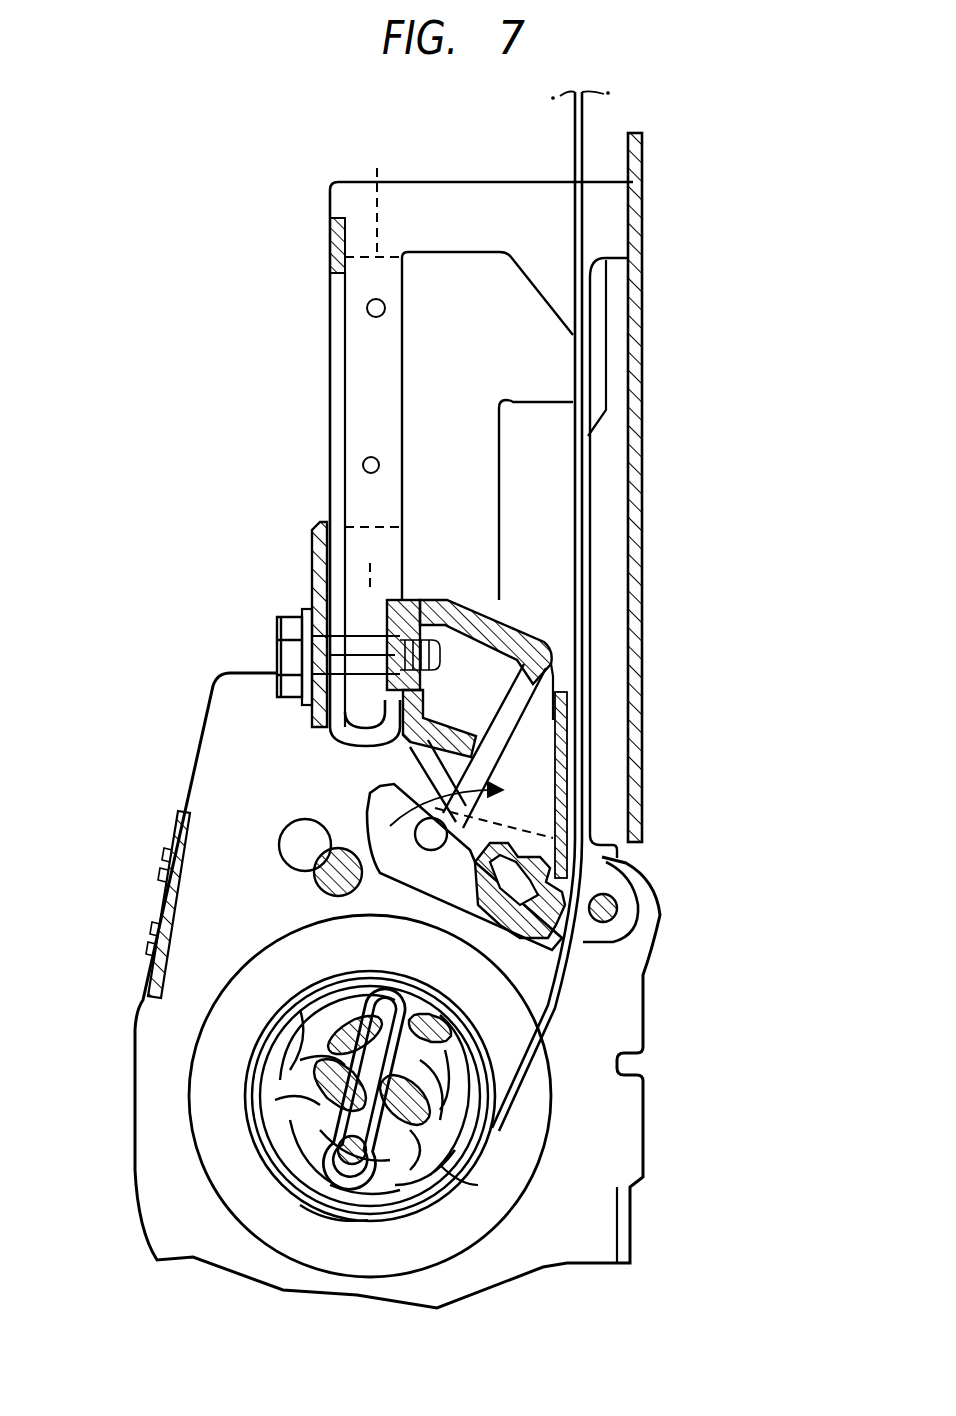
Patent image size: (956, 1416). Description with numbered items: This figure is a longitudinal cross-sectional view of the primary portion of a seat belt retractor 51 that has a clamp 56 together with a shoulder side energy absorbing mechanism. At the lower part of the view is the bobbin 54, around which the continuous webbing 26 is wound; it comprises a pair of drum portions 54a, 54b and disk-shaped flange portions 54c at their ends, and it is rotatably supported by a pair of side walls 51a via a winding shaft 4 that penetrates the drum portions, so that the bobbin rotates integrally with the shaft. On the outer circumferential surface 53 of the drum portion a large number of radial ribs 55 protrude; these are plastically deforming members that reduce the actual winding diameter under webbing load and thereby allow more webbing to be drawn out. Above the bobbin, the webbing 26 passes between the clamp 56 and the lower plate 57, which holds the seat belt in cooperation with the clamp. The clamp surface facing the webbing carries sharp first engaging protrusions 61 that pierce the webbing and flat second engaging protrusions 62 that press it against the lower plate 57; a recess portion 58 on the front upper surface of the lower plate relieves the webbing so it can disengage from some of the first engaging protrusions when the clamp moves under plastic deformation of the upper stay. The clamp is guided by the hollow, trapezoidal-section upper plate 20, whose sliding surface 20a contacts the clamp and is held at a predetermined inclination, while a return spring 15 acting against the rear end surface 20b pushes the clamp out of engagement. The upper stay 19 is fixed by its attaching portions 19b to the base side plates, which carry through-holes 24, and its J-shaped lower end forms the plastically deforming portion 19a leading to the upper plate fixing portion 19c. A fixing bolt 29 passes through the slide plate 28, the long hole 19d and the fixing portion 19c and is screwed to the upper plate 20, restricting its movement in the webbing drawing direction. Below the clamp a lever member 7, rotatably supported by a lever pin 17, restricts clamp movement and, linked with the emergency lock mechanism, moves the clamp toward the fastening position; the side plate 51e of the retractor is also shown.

The winding shaft 4 is at (462, 1178).
The lever member 7 is at (606, 958).
The return spring 15 is at (410, 790).
The lever pin 17 is at (618, 908).
The upper stay 19 is at (328, 329).
The plastically deforming portion 19a is at (345, 733).
The attaching portions 19b is at (372, 197).
The upper plate fixing portion 19c is at (372, 559).
The long hole 19d is at (330, 445).
The upper plate 20 is at (470, 588).
The sliding surface 20a is at (538, 698).
The rear end surface 20b is at (405, 757).
The through-holes 24 is at (400, 556).
The continuous webbing 26 is at (590, 125).
The slide plate 28 is at (310, 555).
The fixing bolt 29 is at (277, 642).
The retractor 51 is at (206, 721).
The side walls 51a is at (139, 1096).
The housing side plate 51e is at (641, 402).
The outer circumferential surface 53 is at (348, 1000).
The bobbin 54 is at (182, 1170).
The drum portion 54a is at (311, 1207).
The drum portion 54b is at (401, 1210).
The flange portions 54c is at (214, 1136).
The ribs 55 is at (302, 1028).
The clamp 56 is at (368, 840).
The lower plate 57 is at (608, 473).
The recess portion 58 is at (601, 322).
The first engaging protrusions 61 is at (560, 818).
The second engaging protrusions 62 is at (566, 763).